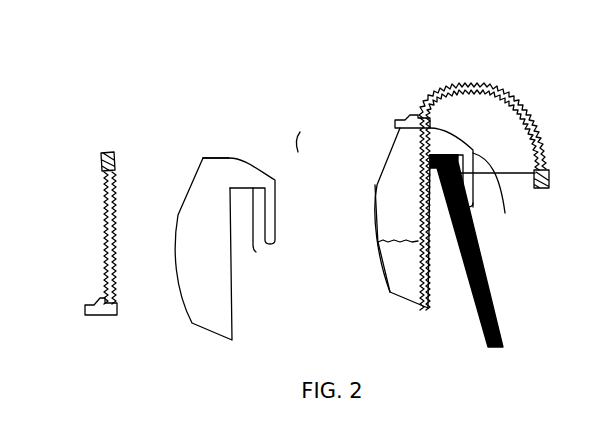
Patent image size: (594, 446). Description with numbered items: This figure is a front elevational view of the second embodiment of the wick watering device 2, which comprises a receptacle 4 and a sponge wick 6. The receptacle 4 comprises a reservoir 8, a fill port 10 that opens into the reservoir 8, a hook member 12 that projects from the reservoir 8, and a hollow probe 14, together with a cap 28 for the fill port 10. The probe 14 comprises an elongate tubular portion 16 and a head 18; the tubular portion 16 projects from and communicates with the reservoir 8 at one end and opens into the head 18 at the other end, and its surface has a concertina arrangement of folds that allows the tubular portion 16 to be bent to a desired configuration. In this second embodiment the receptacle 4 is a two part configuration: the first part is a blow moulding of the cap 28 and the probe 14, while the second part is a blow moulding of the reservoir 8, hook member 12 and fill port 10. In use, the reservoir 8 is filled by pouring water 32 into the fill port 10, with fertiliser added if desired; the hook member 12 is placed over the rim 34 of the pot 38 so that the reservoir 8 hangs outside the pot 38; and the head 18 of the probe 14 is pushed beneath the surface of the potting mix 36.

The watering device 2 is at (300, 132).
The receptacle 4 is at (362, 201).
The sponge wick 6 is at (420, 220).
The reservoir 8 is at (198, 248).
The fill port 10 is at (220, 150).
The hook member 12 is at (368, 204).
The hollow probe 14 is at (43, 180).
The elongate tubular portion 16 is at (105, 235).
The head 18 is at (100, 162).
The cap 28 is at (105, 313).
The water 32 is at (403, 240).
The rim 34 is at (435, 170).
The potting mix 36 is at (513, 172).
The pot 38 is at (492, 295).